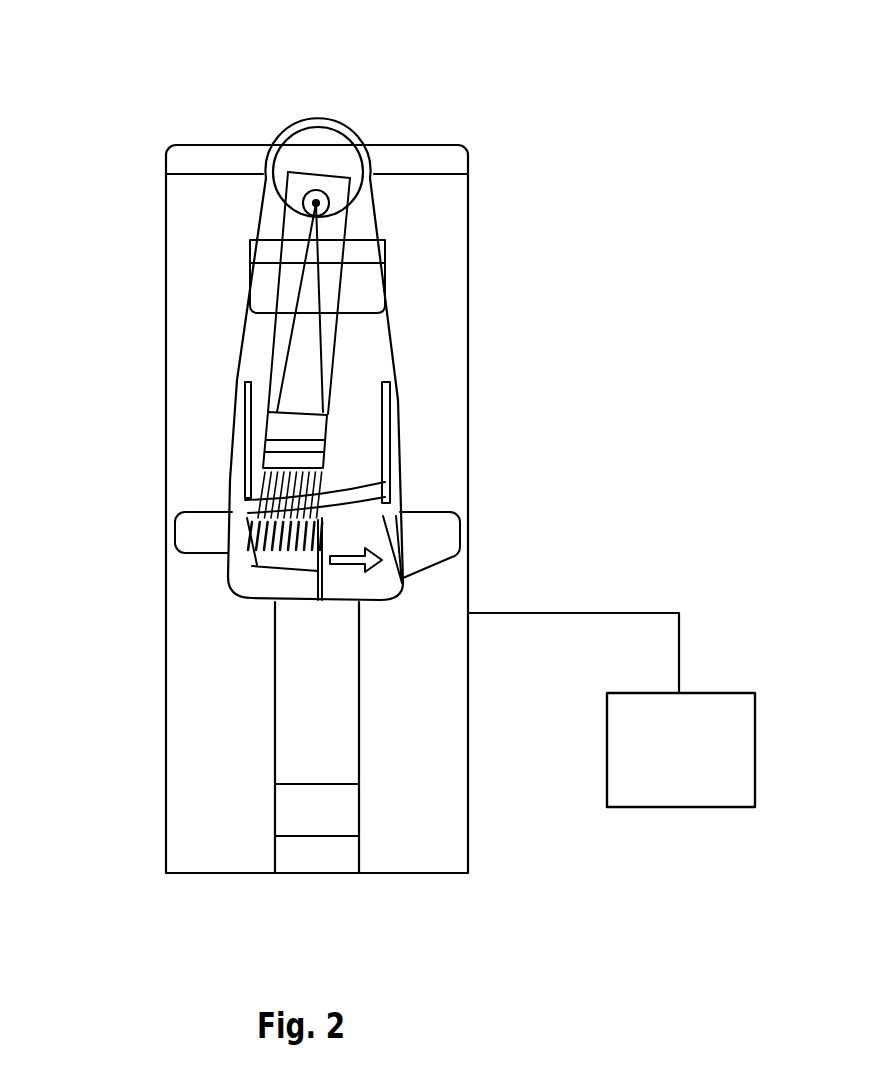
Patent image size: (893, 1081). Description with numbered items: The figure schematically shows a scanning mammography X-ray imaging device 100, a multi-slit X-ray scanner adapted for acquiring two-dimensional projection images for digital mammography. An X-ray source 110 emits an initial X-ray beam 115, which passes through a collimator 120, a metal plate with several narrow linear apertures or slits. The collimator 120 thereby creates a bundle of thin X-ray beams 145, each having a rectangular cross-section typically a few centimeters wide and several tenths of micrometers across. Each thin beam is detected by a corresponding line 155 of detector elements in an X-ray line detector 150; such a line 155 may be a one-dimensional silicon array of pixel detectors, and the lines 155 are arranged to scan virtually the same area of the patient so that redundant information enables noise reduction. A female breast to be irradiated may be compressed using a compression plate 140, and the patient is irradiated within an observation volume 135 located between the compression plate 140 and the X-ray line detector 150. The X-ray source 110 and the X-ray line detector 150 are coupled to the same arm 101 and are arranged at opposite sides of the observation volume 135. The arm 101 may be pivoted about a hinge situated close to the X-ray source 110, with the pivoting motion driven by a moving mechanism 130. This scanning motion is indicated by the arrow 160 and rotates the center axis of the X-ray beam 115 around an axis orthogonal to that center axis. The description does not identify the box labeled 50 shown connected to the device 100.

The controller 50 is at (681, 750).
The scanning mammography X-ray imaging device 100 is at (548, 220).
The arm 101 is at (270, 208).
The X-ray source 110 is at (348, 146).
The initial X-ray beam 115 is at (303, 338).
The collimator 120 is at (255, 438).
The moving mechanism 130 is at (456, 541).
The observation volume 135 is at (385, 505).
The compression plate 140 is at (228, 479).
The thin X-ray beams 145 is at (253, 513).
The X-ray line detector 150 is at (236, 556).
The line of detector elements 155 is at (243, 572).
The arrow 160 is at (357, 568).